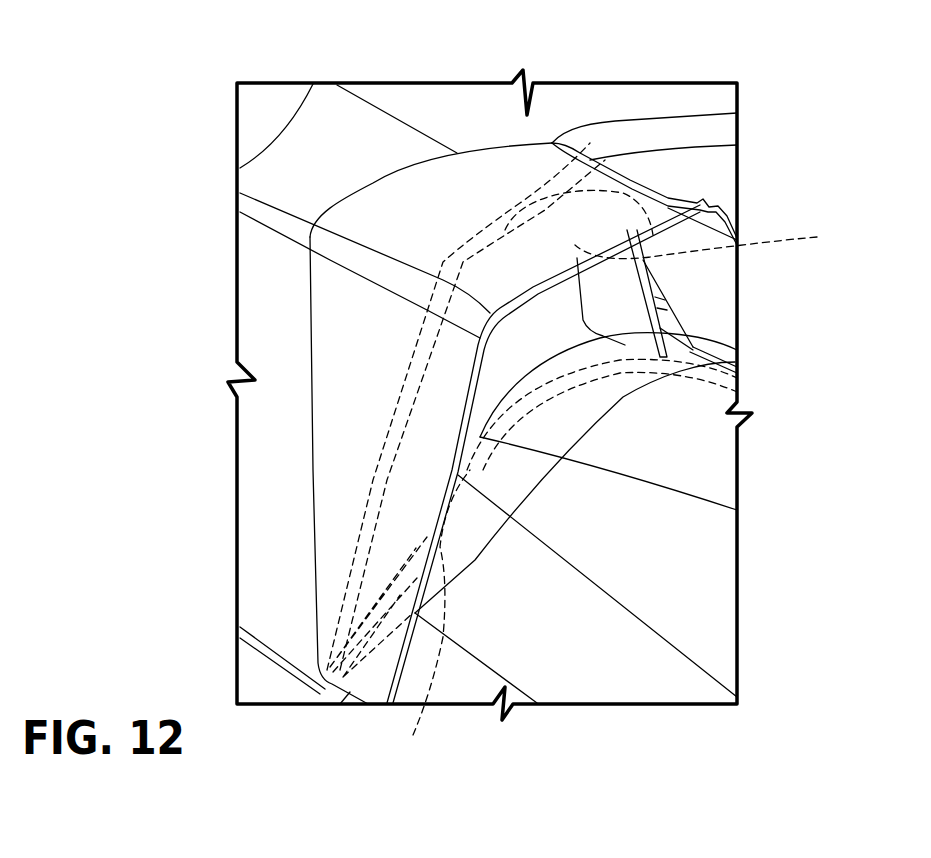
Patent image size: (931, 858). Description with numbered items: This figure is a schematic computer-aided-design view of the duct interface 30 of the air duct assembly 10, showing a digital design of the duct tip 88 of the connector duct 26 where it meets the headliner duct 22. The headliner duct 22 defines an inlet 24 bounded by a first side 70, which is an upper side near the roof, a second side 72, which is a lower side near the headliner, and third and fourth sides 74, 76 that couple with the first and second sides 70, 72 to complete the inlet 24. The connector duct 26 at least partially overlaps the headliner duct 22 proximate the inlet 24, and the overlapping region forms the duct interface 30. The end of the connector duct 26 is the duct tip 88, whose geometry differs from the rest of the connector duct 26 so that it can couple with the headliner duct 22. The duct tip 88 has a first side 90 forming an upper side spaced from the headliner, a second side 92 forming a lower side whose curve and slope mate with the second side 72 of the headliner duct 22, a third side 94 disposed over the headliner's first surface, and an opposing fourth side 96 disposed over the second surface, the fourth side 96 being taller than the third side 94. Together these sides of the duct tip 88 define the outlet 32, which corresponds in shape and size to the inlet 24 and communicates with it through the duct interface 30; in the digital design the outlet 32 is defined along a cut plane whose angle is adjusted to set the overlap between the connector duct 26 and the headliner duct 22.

The air duct assembly 10 is at (778, 130).
The headliner duct 22 is at (665, 100).
The inlet 24 is at (715, 242).
The connector duct 26 is at (673, 463).
The duct interface 30 is at (650, 167).
The outlet 32 is at (690, 338).
The first side 70 is at (435, 282).
The second side 72 is at (428, 620).
The third side 74 is at (367, 507).
The fourth side 76 is at (657, 309).
The duct tip 88 is at (665, 203).
The first side 90 is at (372, 180).
The second side 92 is at (478, 477).
The third side 94 is at (688, 325).
The fourth side 96 is at (320, 423).